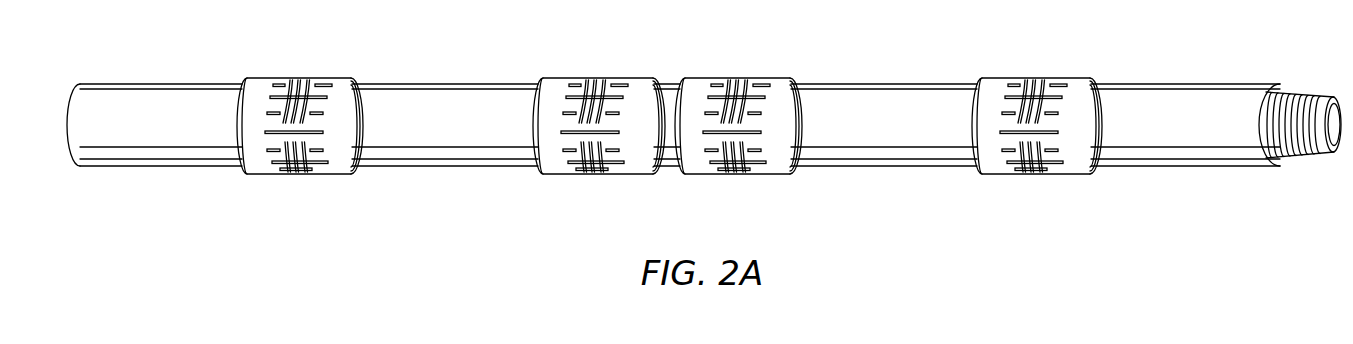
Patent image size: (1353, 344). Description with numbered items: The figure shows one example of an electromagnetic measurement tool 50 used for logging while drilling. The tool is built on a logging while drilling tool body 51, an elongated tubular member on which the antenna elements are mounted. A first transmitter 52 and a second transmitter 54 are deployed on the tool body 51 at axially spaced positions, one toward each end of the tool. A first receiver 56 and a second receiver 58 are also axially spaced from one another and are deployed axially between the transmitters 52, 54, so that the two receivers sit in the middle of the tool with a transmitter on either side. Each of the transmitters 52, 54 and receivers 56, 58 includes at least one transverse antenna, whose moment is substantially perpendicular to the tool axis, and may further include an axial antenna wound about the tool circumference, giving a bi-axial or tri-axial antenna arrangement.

The electromagnetic measurement tool 50 is at (903, 57).
The logging while drilling tool body 51 is at (155, 83).
The first transmitter 52 is at (288, 80).
The second transmitter 54 is at (1070, 79).
The first receiver 56 is at (582, 80).
The second receiver 58 is at (758, 78).